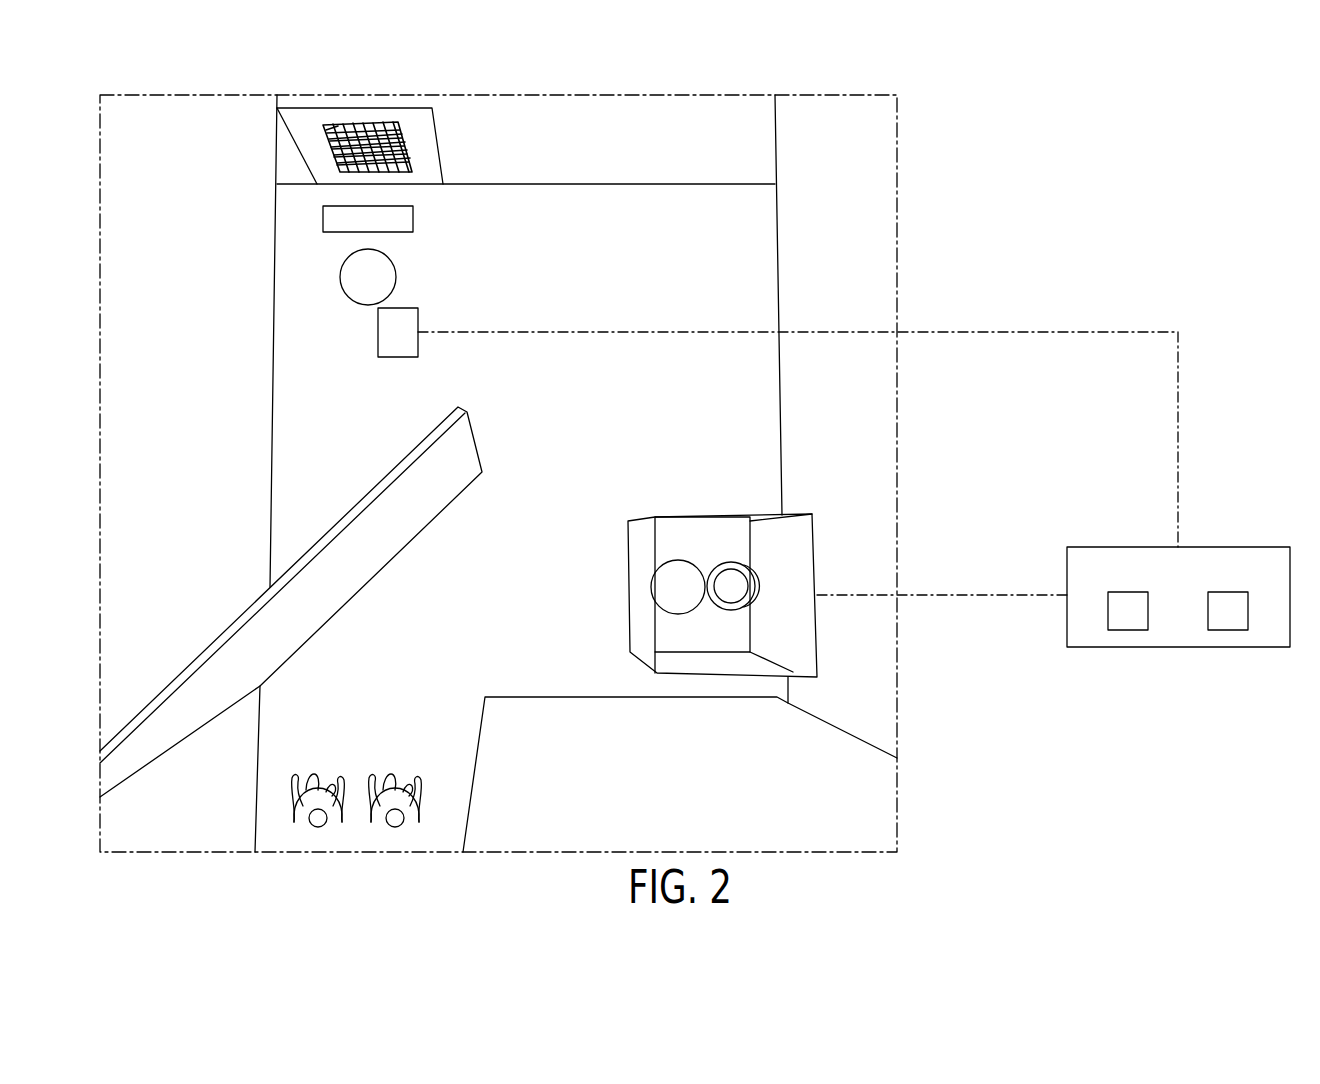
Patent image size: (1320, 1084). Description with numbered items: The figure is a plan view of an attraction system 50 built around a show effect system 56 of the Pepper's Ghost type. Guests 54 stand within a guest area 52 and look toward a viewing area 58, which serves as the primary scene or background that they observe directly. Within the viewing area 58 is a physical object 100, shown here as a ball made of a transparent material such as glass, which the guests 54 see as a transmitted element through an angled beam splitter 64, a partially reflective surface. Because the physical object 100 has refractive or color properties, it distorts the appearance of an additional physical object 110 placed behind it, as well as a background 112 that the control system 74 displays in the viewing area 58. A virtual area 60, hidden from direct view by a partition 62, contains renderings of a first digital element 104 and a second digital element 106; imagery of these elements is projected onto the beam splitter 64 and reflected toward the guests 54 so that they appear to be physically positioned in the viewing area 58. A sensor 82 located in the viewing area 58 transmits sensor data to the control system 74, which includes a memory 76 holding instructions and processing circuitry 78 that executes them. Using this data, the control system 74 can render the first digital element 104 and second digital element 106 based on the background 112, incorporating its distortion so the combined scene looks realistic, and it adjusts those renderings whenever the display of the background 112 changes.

The attraction system 50 is at (1009, 180).
The guest area 52 is at (415, 740).
The guests 54 is at (378, 805).
The show effect system 56 is at (924, 410).
The viewing area 58 is at (483, 158).
The virtual area 60 is at (815, 553).
The partition 62 is at (510, 748).
The beam splitter 64 is at (443, 493).
The control system 74 is at (1235, 547).
The memory 76 is at (1108, 612).
The processing circuitry 78 is at (1248, 612).
The sensor 82 is at (398, 357).
The physical object 100 is at (397, 272).
The first digital element 104 is at (720, 573).
The second digital element 106 is at (678, 605).
The additional physical object 110 is at (414, 219).
The background 112 is at (302, 135).